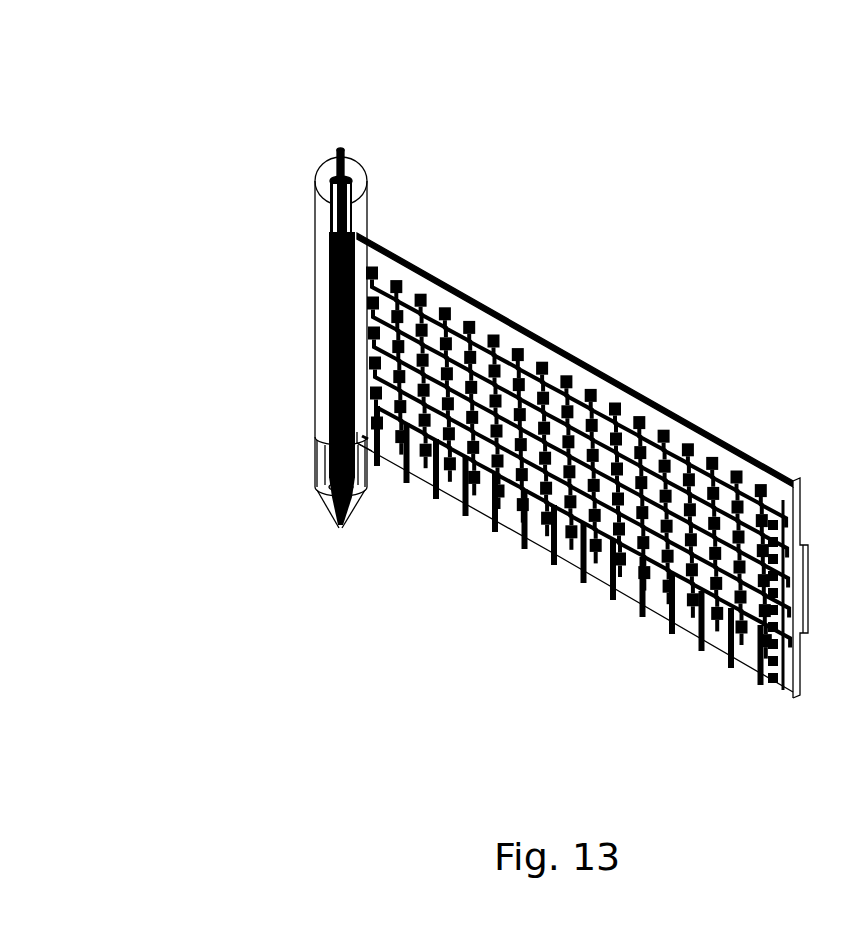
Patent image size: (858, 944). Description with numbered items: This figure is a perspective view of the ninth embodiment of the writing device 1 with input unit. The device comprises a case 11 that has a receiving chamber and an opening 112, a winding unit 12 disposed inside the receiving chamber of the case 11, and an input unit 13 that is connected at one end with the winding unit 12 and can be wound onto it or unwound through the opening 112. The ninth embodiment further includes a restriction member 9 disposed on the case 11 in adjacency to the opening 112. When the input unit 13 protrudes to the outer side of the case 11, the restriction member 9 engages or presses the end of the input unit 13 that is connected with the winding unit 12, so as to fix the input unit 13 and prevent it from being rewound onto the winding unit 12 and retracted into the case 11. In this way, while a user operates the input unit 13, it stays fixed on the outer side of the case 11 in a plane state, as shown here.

The writing device 1 is at (514, 126).
The restriction member 9 is at (315, 437).
The case 11 is at (322, 222).
The winding unit 12 is at (357, 233).
The input unit 13 is at (655, 420).
The opening 112 is at (360, 453).